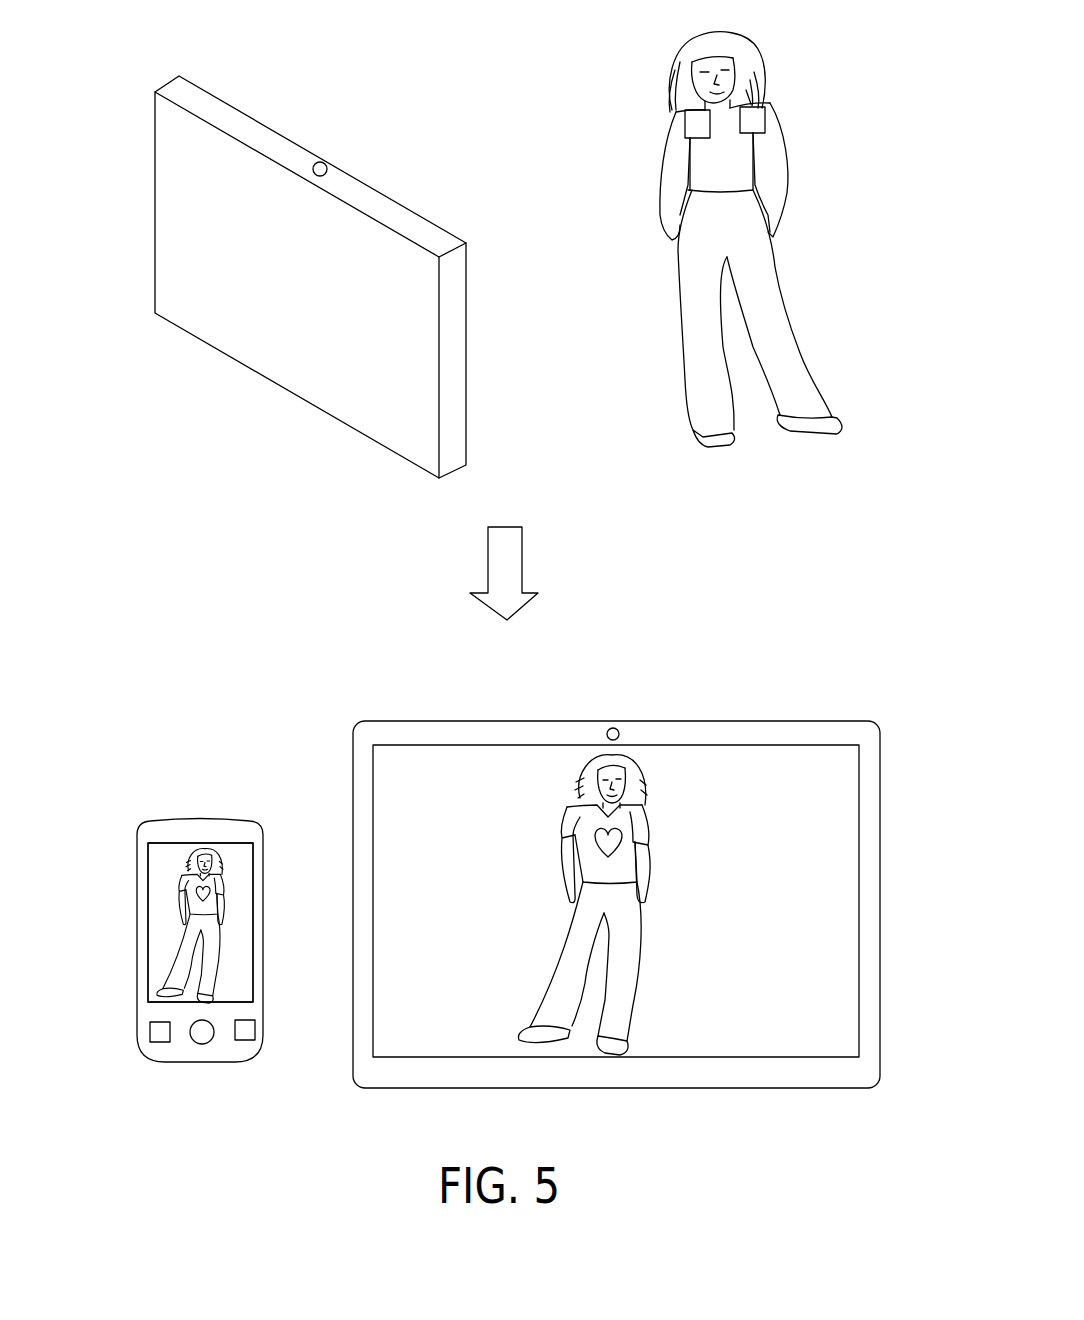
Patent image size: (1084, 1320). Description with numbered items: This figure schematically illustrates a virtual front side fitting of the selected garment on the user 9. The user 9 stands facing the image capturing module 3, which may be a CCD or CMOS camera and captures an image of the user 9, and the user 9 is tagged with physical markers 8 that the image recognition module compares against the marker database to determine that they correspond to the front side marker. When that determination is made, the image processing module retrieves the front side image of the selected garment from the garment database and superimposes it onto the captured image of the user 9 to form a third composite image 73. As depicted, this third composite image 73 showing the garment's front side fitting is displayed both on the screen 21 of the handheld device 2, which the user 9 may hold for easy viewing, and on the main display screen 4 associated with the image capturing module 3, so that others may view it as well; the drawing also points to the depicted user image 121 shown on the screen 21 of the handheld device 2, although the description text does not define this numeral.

The handheld device 2 is at (212, 832).
The image capturing module 3 is at (325, 163).
The main display screen 4 is at (257, 375).
The physical marker 8 is at (687, 127).
The user 9 is at (732, 53).
The screen 21 is at (237, 853).
The third composite image 73 is at (727, 770).
The user image 121 is at (210, 932).